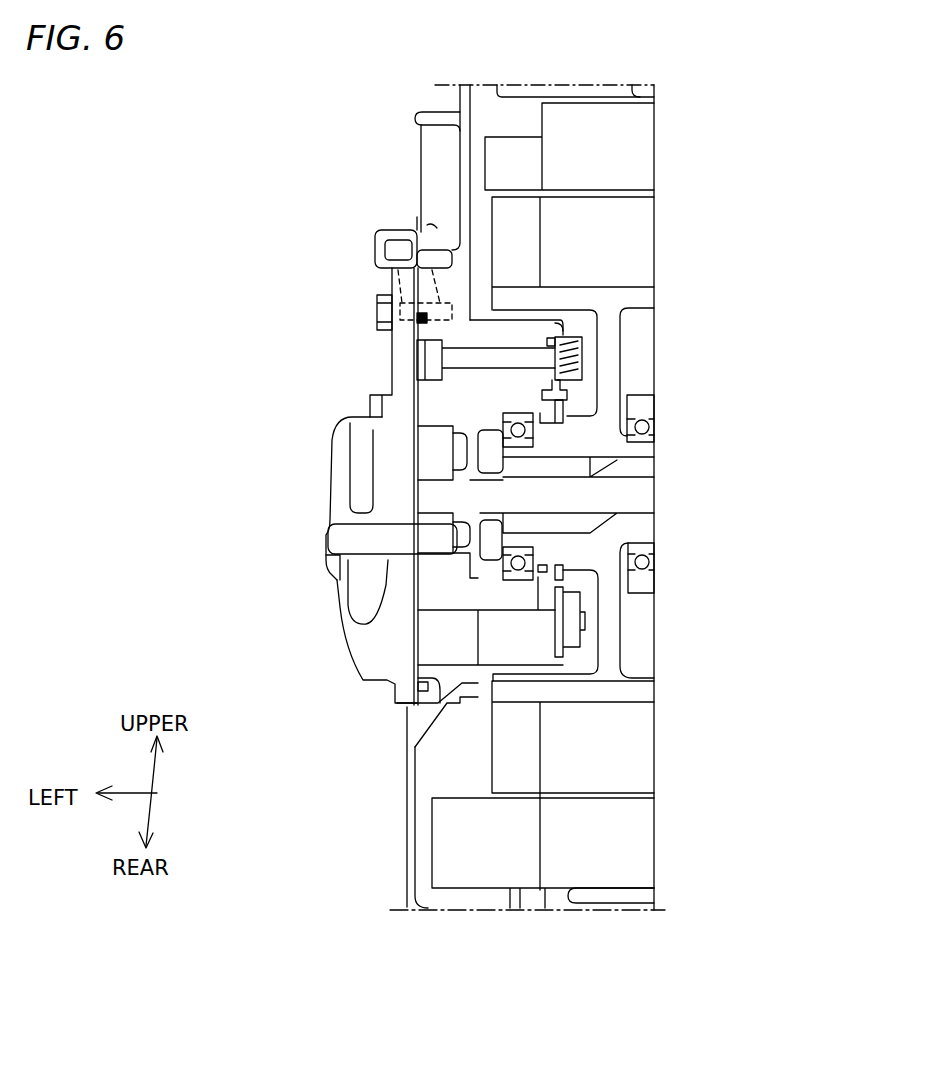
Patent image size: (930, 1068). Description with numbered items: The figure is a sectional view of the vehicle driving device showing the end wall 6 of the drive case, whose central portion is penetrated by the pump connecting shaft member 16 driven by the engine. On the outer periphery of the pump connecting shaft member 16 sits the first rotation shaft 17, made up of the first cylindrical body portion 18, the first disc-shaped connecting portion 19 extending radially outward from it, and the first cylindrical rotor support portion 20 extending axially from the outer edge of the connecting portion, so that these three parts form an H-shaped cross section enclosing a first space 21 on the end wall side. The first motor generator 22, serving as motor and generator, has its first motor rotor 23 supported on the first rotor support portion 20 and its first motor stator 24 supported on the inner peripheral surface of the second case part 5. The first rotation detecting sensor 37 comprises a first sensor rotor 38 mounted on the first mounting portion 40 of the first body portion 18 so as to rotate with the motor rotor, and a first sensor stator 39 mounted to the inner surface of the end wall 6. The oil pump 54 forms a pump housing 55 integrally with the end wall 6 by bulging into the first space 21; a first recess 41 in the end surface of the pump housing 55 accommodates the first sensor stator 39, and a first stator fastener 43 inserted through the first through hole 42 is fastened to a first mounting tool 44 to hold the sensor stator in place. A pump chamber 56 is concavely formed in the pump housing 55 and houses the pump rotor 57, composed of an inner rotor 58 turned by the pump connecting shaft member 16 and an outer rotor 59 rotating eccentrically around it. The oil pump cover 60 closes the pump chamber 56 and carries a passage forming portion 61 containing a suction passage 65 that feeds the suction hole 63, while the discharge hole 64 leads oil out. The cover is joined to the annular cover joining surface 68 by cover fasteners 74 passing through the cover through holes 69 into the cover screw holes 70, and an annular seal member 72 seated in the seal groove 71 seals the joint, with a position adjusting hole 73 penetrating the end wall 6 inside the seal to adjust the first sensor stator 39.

The second case part 5 is at (672, 901).
The end wall 6 is at (390, 881).
The pump connecting shaft member 16 is at (632, 497).
The first rotation shaft 17 is at (637, 705).
The first cylindrical body portion 18 is at (615, 463).
The first disc-shaped connecting portion 19 is at (632, 333).
The first cylindrical rotor support portion 20 is at (638, 295).
The first space 21 is at (583, 327).
The first motor generator 22 is at (617, 197).
The first motor rotor 23 is at (623, 220).
The first motor stator 24 is at (640, 130).
The first rotation detecting sensor 37 is at (729, 414).
The first sensor rotor 38 is at (632, 410).
The first sensor stator 39 is at (632, 397).
The first mounting portion 40 is at (562, 445).
The first recess 41 is at (590, 345).
The first through hole 42 is at (493, 320).
The first stator fastener 43 is at (412, 350).
The first mounting tool 44 is at (577, 373).
The oil pump 54 is at (333, 560).
The pump housing 55 is at (462, 578).
The pump chamber 56 is at (347, 562).
The pump rotor 57 is at (319, 458).
The inner rotor 58 is at (433, 462).
The outer rotor 59 is at (430, 432).
The oil pump cover 60 is at (400, 365).
The passage forming portion 61 is at (348, 618).
The suction hole 63 is at (380, 540).
The discharge hole 64 is at (403, 462).
The suction passage 65 is at (370, 590).
The cover joining surface 68 is at (413, 390).
The cover through hole 69 is at (375, 238).
The cover screw hole 70 is at (400, 222).
The seal groove 71 is at (412, 712).
The seal member 72 is at (417, 687).
The position adjusting hole 73 is at (448, 613).
The cover fastener 74 is at (380, 312).